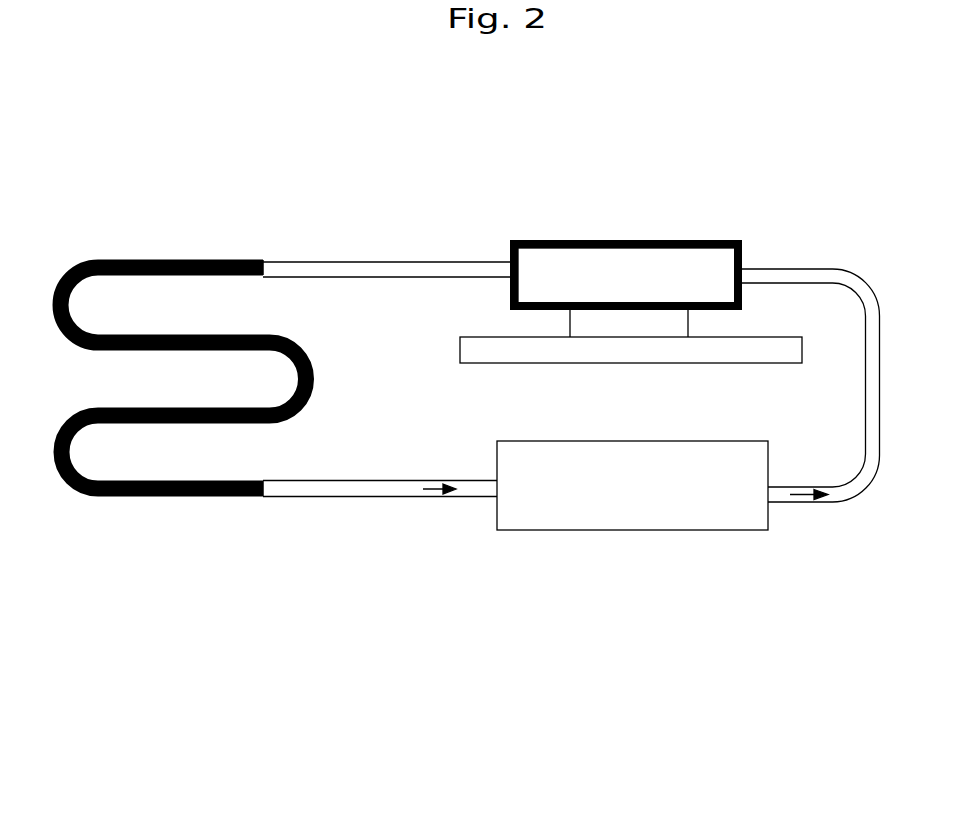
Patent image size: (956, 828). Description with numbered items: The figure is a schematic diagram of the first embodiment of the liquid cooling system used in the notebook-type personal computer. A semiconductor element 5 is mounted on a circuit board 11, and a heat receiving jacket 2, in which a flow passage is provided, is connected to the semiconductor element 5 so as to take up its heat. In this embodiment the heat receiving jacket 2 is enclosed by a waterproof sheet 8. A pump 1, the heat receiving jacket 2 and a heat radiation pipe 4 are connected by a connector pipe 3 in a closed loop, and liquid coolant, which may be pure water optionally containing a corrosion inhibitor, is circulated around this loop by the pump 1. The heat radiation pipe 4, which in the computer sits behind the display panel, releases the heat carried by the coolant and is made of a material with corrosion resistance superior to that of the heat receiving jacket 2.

The pump 1 is at (615, 530).
The heat receiving jacket 2 is at (623, 263).
The connector pipe 3 is at (345, 497).
The heat radiation pipe 4 is at (205, 259).
The semiconductor element 5 is at (589, 326).
The waterproof sheet 8 is at (706, 239).
The circuit board 11 is at (752, 345).